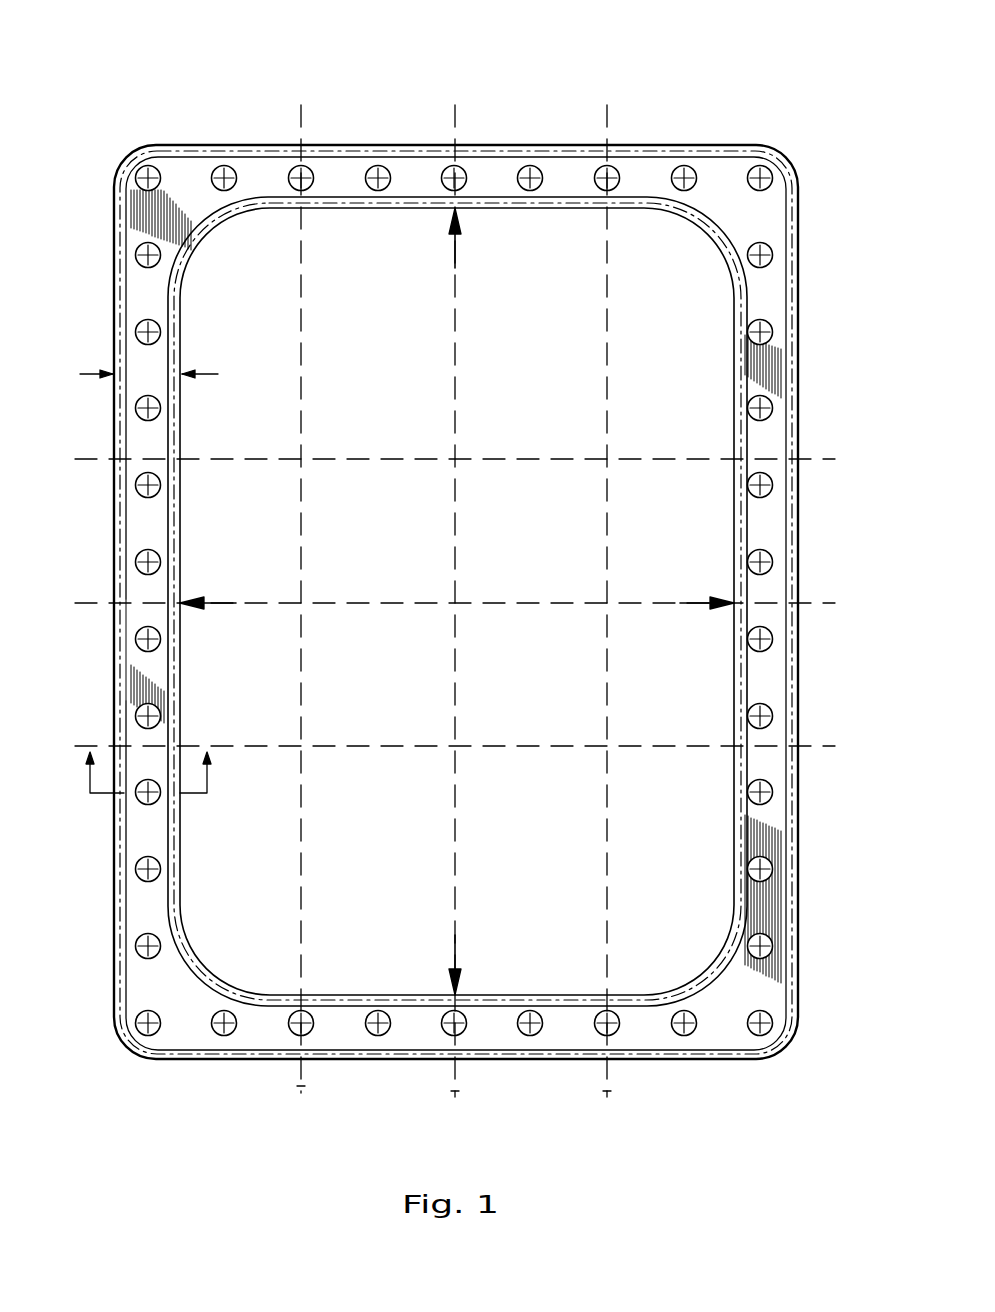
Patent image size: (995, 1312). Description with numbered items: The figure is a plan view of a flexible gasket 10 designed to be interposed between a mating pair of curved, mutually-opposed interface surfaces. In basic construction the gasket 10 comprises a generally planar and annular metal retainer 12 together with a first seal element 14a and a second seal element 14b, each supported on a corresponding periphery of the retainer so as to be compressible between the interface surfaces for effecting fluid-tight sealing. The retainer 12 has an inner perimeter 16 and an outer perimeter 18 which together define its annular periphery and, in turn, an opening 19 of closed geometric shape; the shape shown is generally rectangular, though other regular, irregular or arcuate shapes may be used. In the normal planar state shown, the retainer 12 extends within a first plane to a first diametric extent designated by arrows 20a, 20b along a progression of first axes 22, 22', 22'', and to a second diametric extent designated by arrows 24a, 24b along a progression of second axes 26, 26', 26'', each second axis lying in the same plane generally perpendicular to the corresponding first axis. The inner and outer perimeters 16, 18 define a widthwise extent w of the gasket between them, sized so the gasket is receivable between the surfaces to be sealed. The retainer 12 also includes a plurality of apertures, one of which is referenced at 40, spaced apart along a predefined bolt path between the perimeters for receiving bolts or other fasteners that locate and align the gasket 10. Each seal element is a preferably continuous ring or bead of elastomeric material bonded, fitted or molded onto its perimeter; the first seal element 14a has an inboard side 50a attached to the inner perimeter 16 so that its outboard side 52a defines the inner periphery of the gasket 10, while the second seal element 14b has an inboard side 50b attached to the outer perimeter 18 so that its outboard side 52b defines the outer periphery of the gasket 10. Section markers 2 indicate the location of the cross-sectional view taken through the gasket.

The flexible gasket 10 is at (798, 66).
The metal retainer 12 is at (725, 168).
The first seal element 14a is at (497, 210).
The second seal element 14b is at (497, 152).
The inner perimeter 16 is at (172, 655).
The outer perimeter 18 is at (125, 652).
The opening 19 is at (546, 567).
The arrow 20a is at (216, 602).
The arrow 20b is at (692, 602).
The first axis 22 is at (466, 570).
The first axis 22' is at (468, 425).
The first axis 22'' is at (471, 711).
The arrow 24a is at (452, 246).
The arrow 24b is at (460, 953).
The second axis 26 is at (491, 607).
The second axis 26' is at (258, 615).
The second axis 26'' is at (653, 604).
The aperture 40 is at (146, 760).
The inboard side 50a is at (166, 858).
The outboard side 52a is at (182, 886).
The inboard side 50b is at (127, 912).
The outboard side 52b is at (116, 932).
The section line 2- 2 is at (144, 770).
The widthwise extent w is at (215, 374).